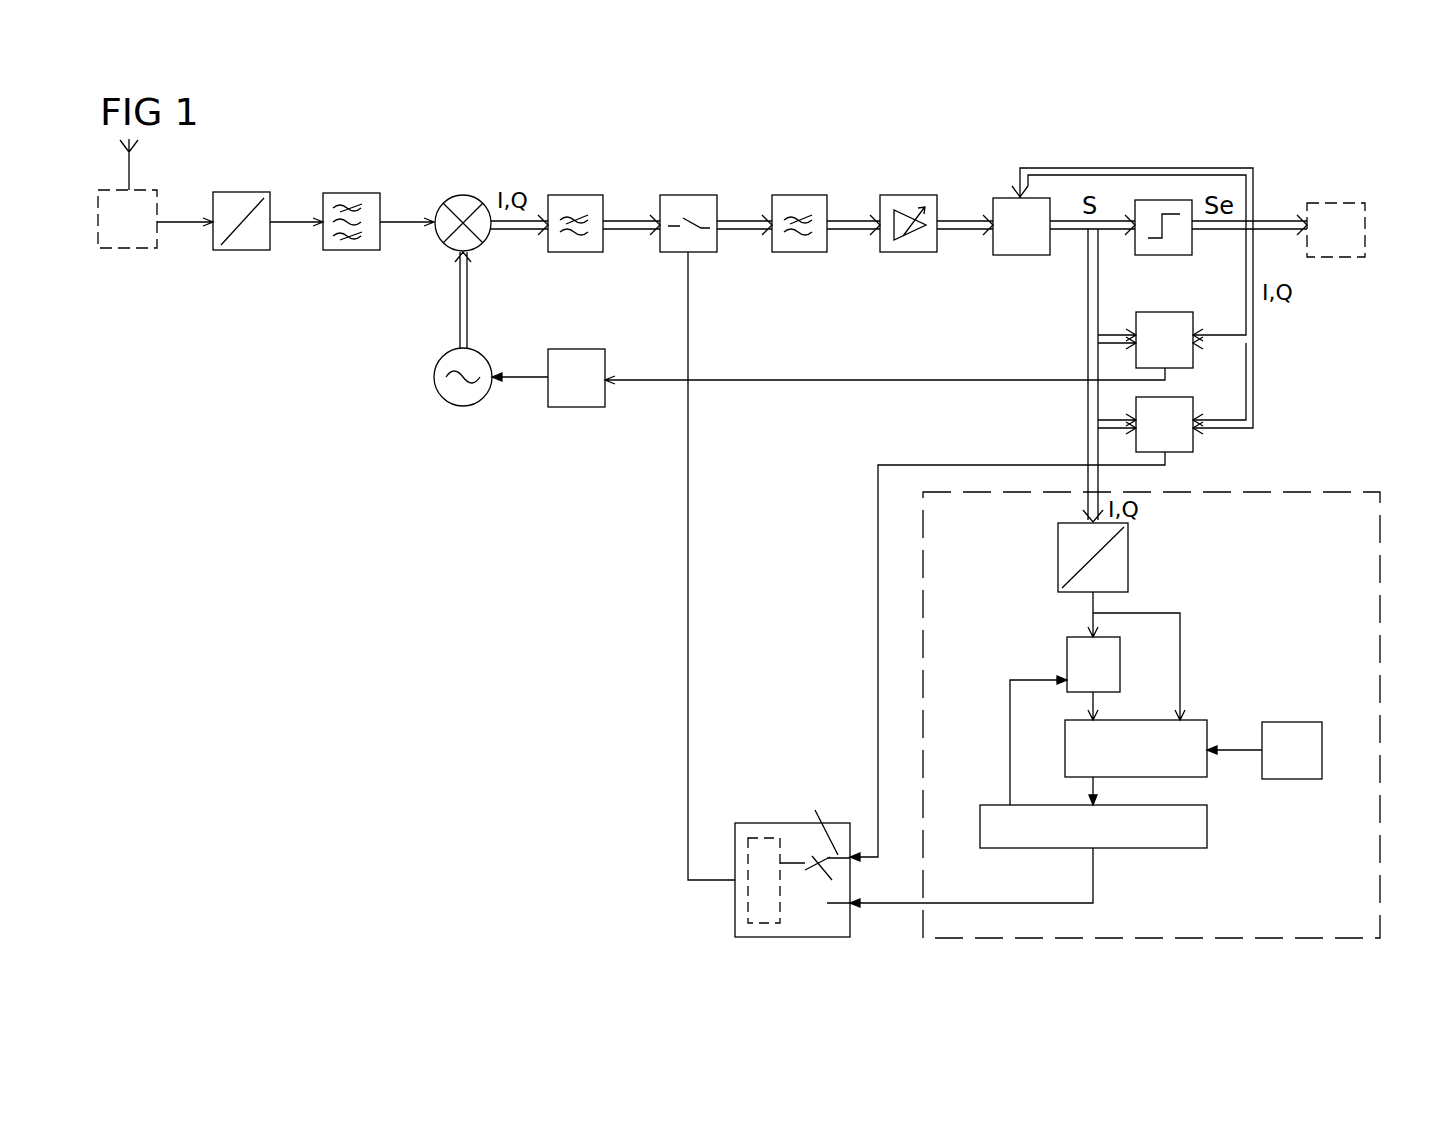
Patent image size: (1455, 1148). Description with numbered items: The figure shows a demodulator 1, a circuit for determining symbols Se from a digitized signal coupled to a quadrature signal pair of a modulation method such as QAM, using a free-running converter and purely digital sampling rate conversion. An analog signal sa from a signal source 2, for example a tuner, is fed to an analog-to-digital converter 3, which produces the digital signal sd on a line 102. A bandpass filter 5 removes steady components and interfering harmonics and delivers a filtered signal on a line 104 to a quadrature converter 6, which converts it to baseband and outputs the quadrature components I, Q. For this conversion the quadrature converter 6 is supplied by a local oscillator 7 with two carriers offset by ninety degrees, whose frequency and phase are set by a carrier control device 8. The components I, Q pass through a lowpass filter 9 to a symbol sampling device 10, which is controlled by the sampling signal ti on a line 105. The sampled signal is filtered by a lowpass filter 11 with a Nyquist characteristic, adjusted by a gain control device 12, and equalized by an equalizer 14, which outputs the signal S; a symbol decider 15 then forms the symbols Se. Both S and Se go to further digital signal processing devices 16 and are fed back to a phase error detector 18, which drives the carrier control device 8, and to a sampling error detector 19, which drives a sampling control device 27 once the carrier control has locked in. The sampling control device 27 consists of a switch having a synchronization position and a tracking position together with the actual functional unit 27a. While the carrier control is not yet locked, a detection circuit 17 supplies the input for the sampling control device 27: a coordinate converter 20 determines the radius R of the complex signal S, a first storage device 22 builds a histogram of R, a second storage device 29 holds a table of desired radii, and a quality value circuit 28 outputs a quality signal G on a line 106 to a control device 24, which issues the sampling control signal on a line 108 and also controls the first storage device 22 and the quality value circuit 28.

The demodulator 1 is at (340, 419).
The signal source 2 is at (130, 248).
The analog-to-digital converter 3 is at (242, 250).
The bandpass filter 5 is at (348, 193).
The quadrature converter 6 is at (463, 195).
The local oscillator 7 is at (460, 406).
The carrier control device 8 is at (572, 407).
The lowpass filter 9 is at (575, 195).
The symbol sampling device 10 is at (688, 195).
The lowpass filter 11 is at (800, 195).
The gain control device 12 is at (910, 195).
The equalizer 14 is at (1003, 197).
The symbol decider 15 is at (1175, 255).
The digital signal processing devices 16 is at (1335, 203).
The detection circuit 17 is at (1380, 910).
The phase error detector 18 is at (1193, 355).
The sampling error detector 19 is at (1193, 442).
The coordinate converter 20 is at (1128, 550).
The first storage device 22 is at (1120, 645).
The control device 24 is at (1207, 832).
The sampling control device 27 is at (735, 923).
The functional unit 27a is at (750, 892).
The quality value circuit 28 is at (1175, 777).
The second storage device 29 is at (1322, 733).
The line 102 is at (293, 232).
The line 104 is at (402, 232).
The line 105 is at (684, 314).
The line 106 is at (1097, 790).
The line 108 is at (1088, 886).